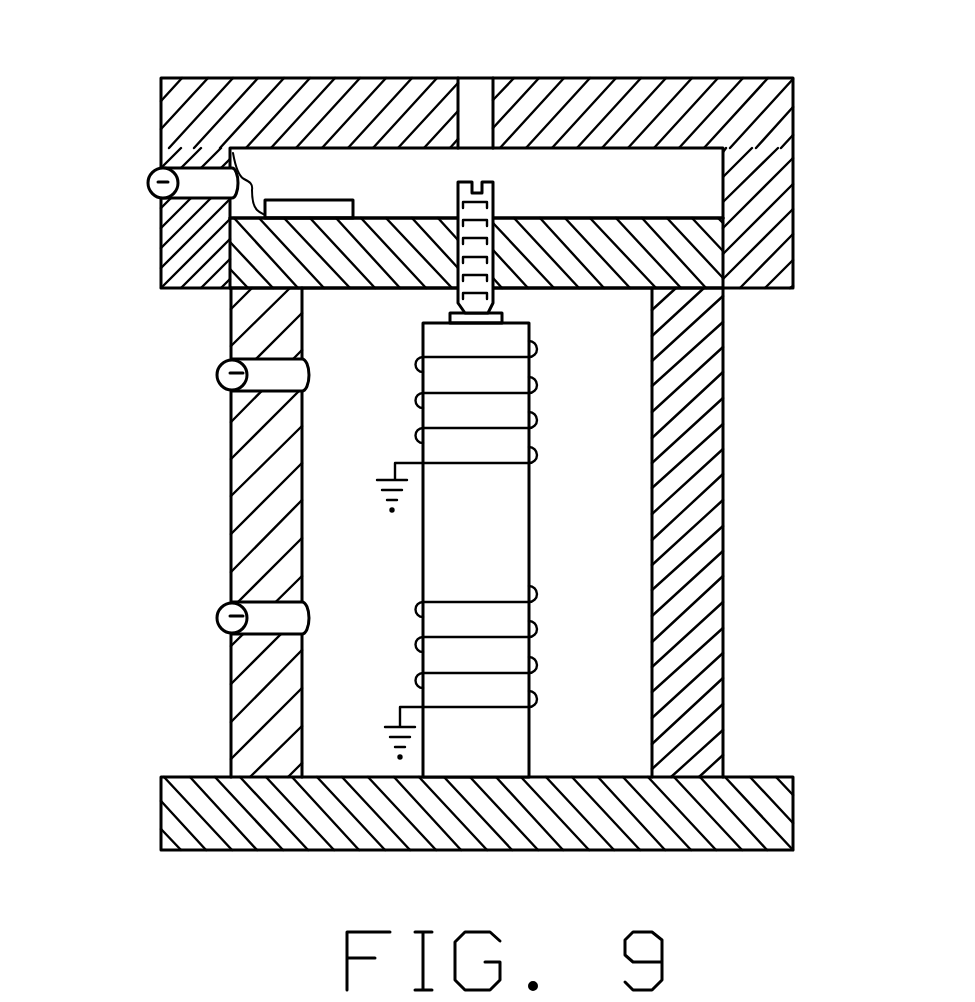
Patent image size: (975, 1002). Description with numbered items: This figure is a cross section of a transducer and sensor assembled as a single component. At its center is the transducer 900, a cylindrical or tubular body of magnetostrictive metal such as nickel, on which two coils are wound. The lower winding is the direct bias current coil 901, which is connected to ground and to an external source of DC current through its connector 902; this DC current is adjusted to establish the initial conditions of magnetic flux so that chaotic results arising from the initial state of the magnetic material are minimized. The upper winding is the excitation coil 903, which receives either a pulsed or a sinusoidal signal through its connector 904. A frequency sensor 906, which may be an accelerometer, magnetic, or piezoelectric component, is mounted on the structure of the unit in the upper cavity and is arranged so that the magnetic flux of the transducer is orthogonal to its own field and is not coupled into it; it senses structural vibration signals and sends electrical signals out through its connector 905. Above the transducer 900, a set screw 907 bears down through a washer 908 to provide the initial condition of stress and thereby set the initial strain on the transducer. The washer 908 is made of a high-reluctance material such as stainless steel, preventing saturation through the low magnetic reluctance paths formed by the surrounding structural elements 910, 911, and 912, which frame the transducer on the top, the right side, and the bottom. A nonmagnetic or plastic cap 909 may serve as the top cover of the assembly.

The transducer 900 is at (423, 767).
The direct bias current coil 901 is at (423, 645).
The connector 902 is at (423, 585).
The excitation coil 903 is at (423, 398).
The connector 904 is at (423, 343).
The connector 905 is at (157, 168).
The frequency sensor 906 is at (287, 200).
The set screw 907 is at (493, 188).
The washer 908 is at (502, 317).
The cap 909 is at (780, 270).
The structural element 910 is at (623, 288).
The structural element 911 is at (725, 508).
The structural element 912 is at (797, 838).